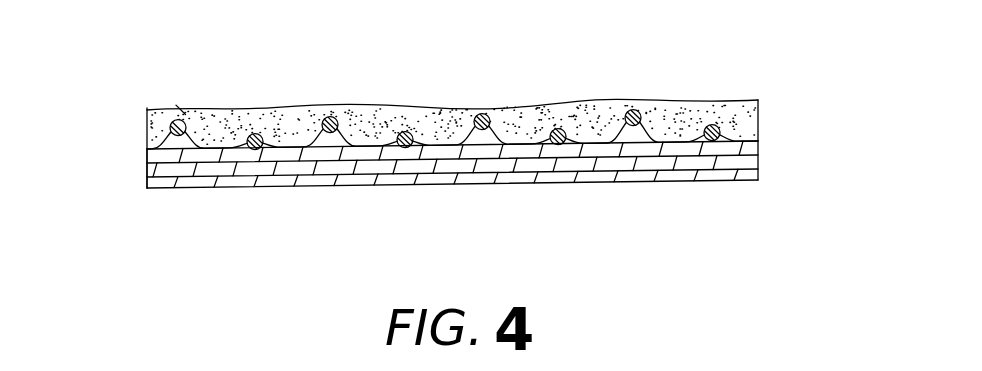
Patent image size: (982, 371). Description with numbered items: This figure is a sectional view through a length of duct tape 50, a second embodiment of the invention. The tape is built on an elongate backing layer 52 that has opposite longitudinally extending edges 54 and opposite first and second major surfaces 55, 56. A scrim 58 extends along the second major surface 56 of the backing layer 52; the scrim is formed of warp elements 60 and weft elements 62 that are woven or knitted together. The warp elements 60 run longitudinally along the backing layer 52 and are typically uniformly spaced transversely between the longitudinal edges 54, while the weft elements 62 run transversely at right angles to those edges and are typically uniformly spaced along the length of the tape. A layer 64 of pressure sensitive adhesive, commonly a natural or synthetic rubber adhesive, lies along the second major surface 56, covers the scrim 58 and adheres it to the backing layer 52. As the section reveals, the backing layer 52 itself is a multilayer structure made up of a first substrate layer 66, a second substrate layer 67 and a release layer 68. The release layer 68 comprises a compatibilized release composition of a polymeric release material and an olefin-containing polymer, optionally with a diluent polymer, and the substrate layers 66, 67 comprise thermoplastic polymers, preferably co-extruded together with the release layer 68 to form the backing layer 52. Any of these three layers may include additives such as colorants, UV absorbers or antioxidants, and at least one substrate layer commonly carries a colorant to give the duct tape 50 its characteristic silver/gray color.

The length of duct tape 50 is at (690, 48).
The backing layer 52 is at (777, 140).
The longitudinally extending edges 54 is at (157, 162).
The first major surface 55 is at (392, 186).
The second major surface 56 is at (422, 122).
The scrim 58 is at (338, 113).
The warp elements 60 is at (330, 125).
The weft elements 62 is at (522, 100).
The layer of pressure sensitive adhesive 64 is at (595, 107).
The first substrate layer 66 is at (750, 150).
The second substrate layer 67 is at (725, 163).
The release layer 68 is at (657, 176).